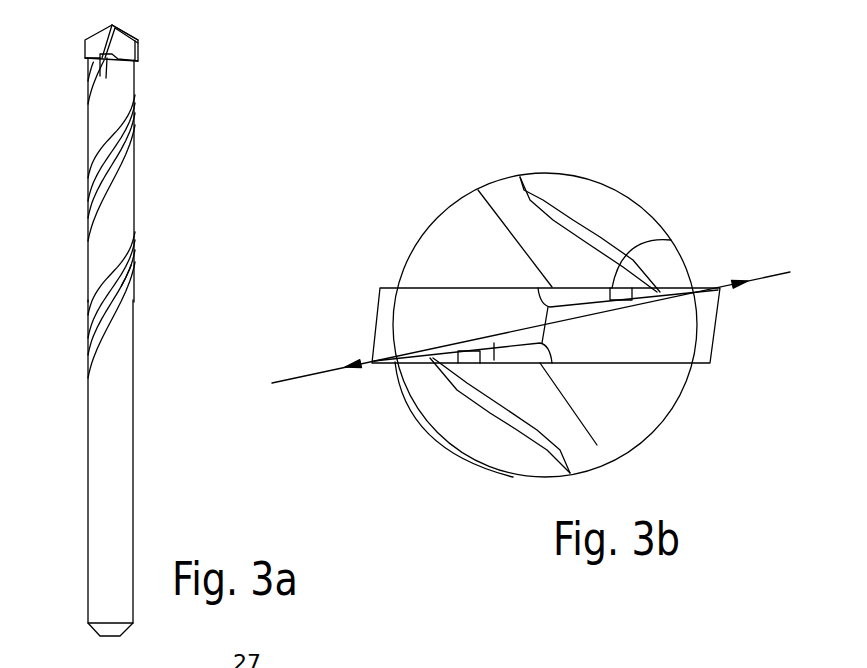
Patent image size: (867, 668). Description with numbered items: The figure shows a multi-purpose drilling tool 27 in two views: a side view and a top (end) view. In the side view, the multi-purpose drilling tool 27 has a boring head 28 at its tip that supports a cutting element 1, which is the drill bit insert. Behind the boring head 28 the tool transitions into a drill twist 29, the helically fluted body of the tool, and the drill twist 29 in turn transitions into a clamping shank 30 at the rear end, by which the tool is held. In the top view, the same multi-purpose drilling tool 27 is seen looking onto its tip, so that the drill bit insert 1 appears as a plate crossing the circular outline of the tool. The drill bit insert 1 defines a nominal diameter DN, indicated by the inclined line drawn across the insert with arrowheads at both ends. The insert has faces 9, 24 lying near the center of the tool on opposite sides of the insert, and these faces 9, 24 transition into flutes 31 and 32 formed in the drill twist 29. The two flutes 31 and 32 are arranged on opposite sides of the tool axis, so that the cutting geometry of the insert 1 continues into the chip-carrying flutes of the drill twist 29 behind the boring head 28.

In FIG. 3A, the cutting element 1 is at (96, 42).
In FIG. 3B, the face 9 is at (494, 343).
In FIG. 3B, the face 24 is at (671, 240).
In FIG. 3A, the multi-purpose drilling tool 27 is at (148, 177).
In FIG. 3B, the multi-purpose drilling tool 27 is at (560, 168).
In FIG. 3A, the boring head 28 is at (118, 52).
In FIG. 3A, the drill twist 29 is at (126, 262).
In FIG. 3B, the drill twist 29 is at (489, 467).
In FIG. 3A, the clamping shank 30 is at (118, 480).
In FIG. 3B, the flute 31 is at (398, 402).
In FIG. 3B, the flute 32 is at (594, 220).
In FIG. 3B, the nominal diameter DN is at (531, 327).